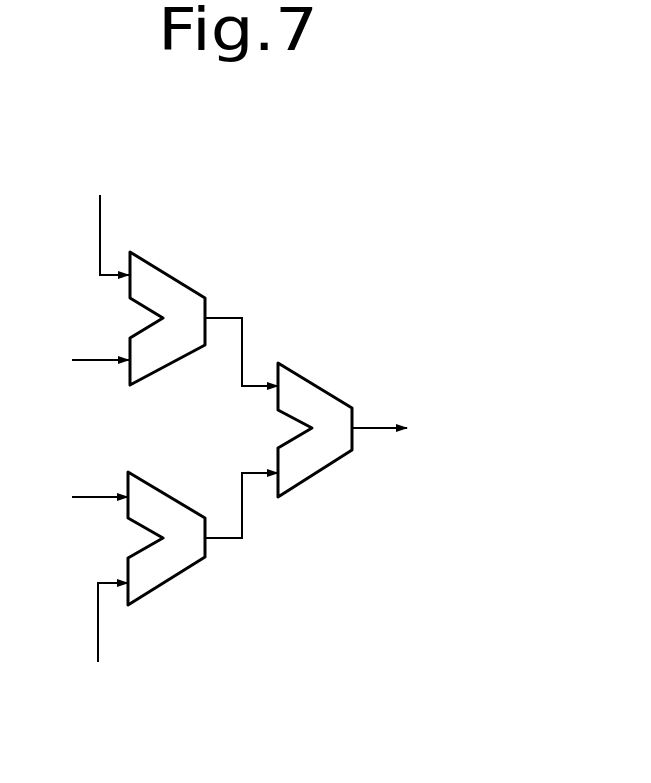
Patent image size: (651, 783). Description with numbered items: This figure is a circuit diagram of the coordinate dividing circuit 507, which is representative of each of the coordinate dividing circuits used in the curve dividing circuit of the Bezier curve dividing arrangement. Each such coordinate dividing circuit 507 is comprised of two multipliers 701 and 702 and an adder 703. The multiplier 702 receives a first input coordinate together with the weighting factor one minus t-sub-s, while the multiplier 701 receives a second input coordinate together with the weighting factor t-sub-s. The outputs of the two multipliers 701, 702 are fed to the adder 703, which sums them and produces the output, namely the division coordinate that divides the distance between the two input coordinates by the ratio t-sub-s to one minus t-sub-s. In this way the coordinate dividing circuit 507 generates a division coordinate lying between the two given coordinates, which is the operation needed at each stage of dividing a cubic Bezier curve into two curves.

The coordinate dividing circuit 507 is at (252, 237).
The multiplier 701 is at (160, 488).
The multiplier 702 is at (160, 268).
The adder 703 is at (312, 381).